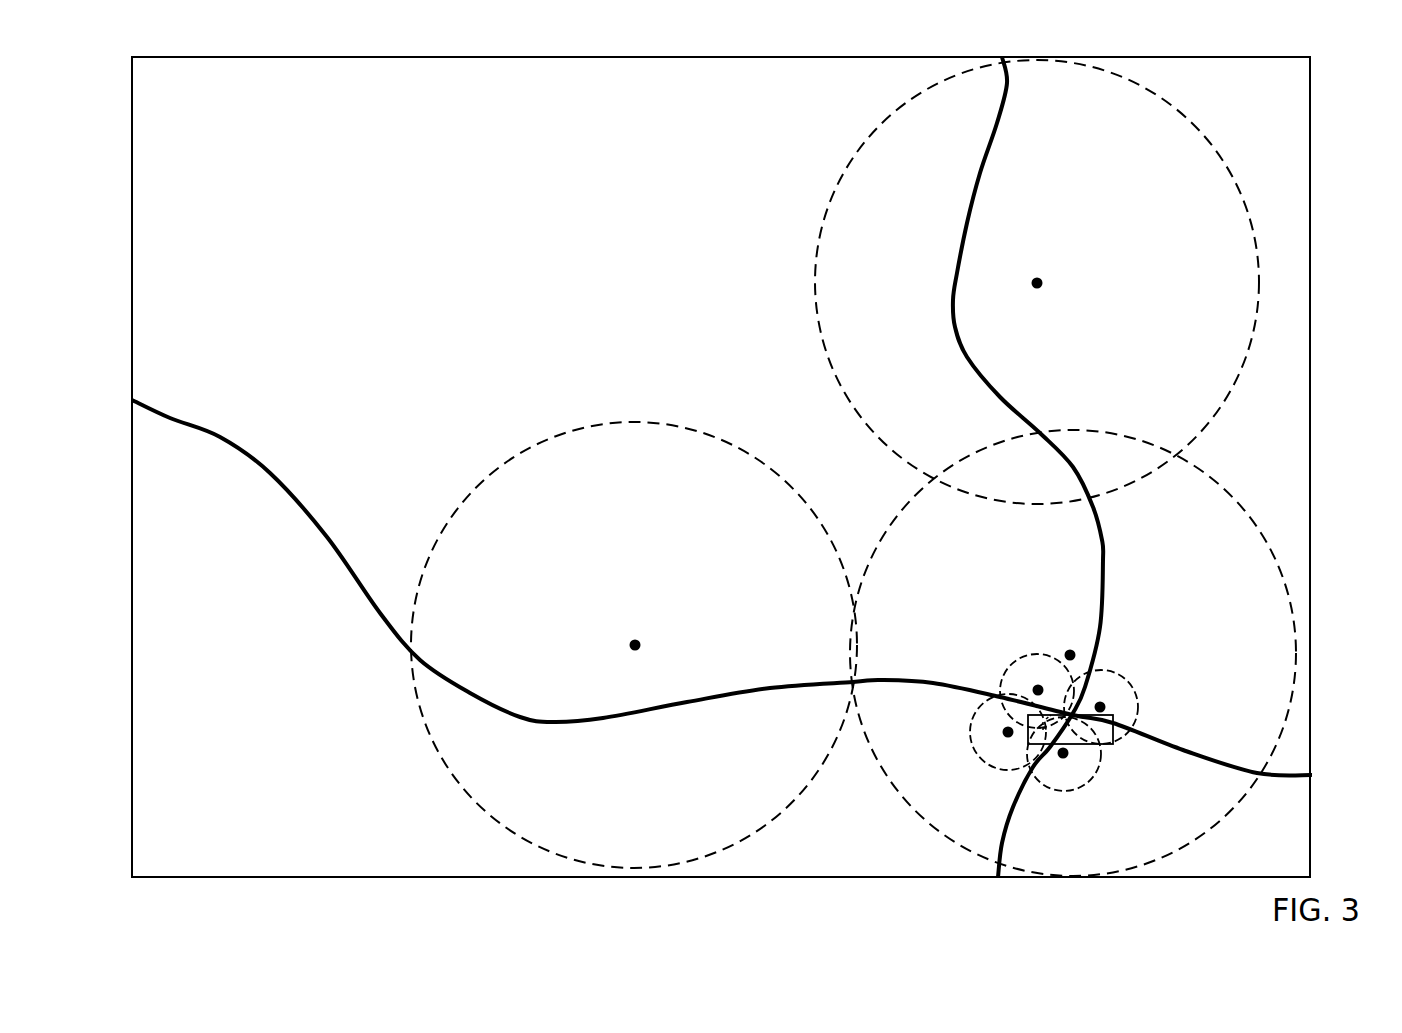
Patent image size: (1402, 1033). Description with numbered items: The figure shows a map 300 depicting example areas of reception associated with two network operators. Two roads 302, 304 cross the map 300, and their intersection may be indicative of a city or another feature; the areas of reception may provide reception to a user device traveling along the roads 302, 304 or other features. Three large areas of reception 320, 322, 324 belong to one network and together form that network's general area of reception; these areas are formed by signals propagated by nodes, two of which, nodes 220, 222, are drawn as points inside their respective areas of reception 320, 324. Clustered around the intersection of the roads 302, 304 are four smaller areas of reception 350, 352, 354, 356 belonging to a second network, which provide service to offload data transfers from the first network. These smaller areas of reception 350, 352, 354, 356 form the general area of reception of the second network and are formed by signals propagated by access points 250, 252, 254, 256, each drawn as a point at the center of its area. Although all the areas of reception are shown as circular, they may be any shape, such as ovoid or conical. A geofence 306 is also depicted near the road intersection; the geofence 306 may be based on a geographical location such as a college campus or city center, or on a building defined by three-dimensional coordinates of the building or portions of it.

The map 300 is at (181, 40).
The road 302 is at (170, 413).
The road 304 is at (1000, 398).
The geofence 306 is at (1108, 745).
The node 220 is at (635, 645).
The node 222 is at (1070, 655).
The access point 250 is at (1038, 690).
The access point 252 is at (1100, 707).
The access point 254 is at (1063, 753).
The access point 256 is at (1008, 732).
The area of reception 320 is at (638, 416).
The area of reception 322 is at (1074, 426).
The area of reception 324 is at (1182, 106).
The area of reception 350 is at (1022, 651).
The area of reception 352 is at (1114, 667).
The area of reception 354 is at (1078, 792).
The area of reception 356 is at (996, 774).